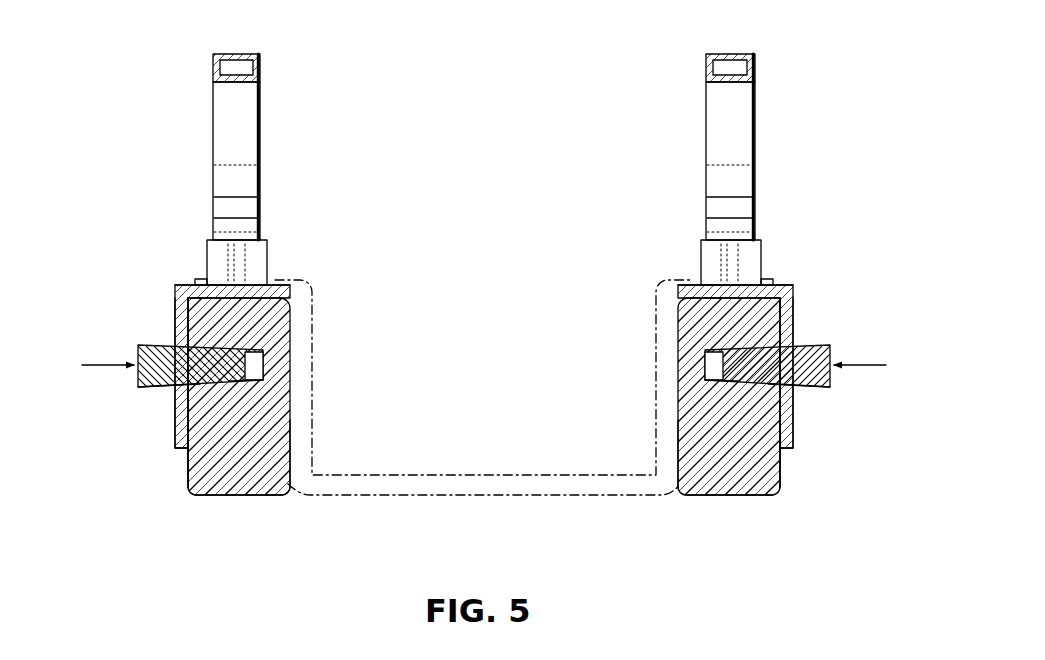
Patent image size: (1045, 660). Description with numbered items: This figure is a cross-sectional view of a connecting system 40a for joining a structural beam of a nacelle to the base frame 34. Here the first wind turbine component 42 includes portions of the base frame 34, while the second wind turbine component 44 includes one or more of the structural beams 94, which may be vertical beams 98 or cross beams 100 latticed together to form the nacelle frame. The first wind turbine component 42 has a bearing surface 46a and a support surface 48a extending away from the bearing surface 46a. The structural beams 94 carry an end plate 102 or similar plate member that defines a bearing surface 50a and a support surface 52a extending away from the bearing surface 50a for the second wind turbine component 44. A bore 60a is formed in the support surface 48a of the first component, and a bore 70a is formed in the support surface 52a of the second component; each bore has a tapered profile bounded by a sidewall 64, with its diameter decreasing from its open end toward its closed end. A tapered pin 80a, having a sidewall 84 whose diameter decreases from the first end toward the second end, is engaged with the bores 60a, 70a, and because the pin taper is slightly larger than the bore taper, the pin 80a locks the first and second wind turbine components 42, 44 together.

The base frame 34 is at (484, 420).
The first wind turbine component 42 is at (412, 503).
The connecting system 40a is at (487, 261).
The second wind turbine component 44 is at (489, 44).
The bearing surface 46a is at (256, 294).
The support surface 48a is at (186, 469).
The bearing surface 50a is at (480, 406).
The support surface 52a is at (193, 412).
The bore 60a is at (266, 370).
The sidewall 64 is at (248, 388).
The bore 70a is at (178, 416).
The tapered pin 80a is at (484, 374).
The sidewall 84 is at (154, 389).
The structural beam 94 is at (446, 146).
The vertical beam 98 is at (446, 146).
The cross beam 100 is at (446, 146).
The end plate 102 is at (482, 346).